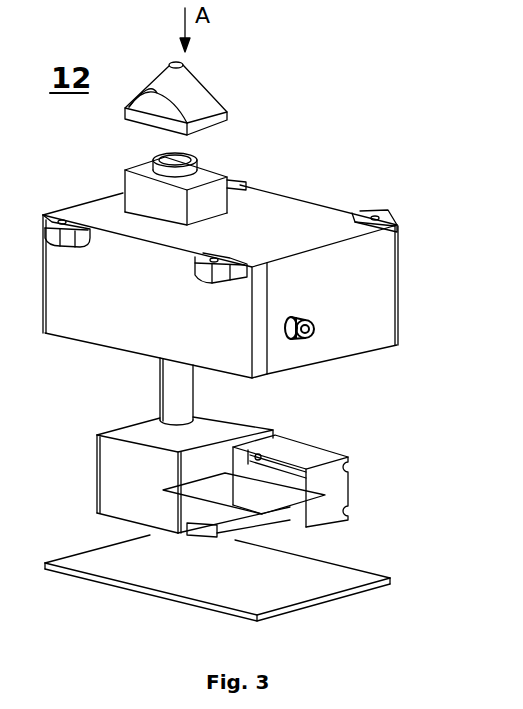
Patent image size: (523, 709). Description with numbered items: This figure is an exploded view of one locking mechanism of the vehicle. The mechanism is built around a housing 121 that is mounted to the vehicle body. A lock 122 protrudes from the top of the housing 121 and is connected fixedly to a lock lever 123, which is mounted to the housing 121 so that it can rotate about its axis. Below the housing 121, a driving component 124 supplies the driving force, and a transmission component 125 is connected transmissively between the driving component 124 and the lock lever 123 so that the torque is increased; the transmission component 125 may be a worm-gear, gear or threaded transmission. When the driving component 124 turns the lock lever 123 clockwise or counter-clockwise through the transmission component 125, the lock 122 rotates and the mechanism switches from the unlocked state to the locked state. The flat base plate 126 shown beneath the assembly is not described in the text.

The housing 121 is at (300, 208).
The lock 122 is at (203, 105).
The lock lever 123 is at (173, 385).
The driving component 124 is at (343, 487).
The transmission component 125 is at (113, 468).
The base plate 126 is at (90, 580).